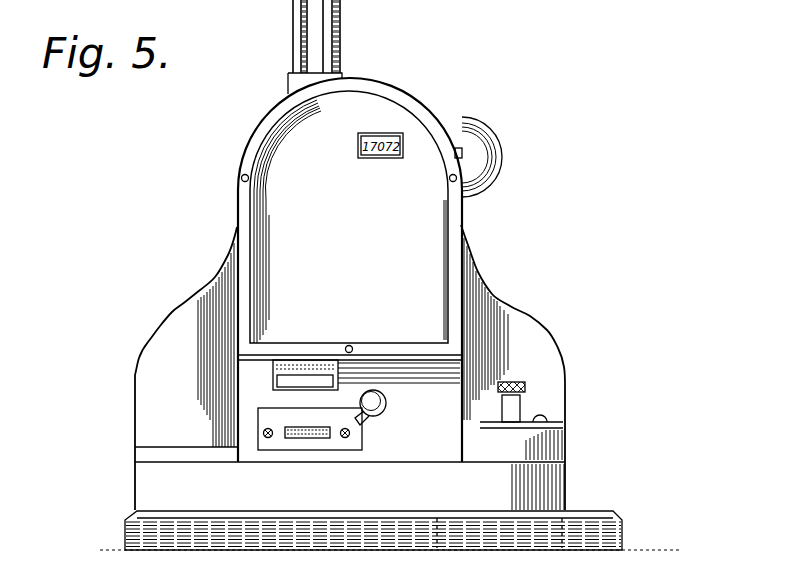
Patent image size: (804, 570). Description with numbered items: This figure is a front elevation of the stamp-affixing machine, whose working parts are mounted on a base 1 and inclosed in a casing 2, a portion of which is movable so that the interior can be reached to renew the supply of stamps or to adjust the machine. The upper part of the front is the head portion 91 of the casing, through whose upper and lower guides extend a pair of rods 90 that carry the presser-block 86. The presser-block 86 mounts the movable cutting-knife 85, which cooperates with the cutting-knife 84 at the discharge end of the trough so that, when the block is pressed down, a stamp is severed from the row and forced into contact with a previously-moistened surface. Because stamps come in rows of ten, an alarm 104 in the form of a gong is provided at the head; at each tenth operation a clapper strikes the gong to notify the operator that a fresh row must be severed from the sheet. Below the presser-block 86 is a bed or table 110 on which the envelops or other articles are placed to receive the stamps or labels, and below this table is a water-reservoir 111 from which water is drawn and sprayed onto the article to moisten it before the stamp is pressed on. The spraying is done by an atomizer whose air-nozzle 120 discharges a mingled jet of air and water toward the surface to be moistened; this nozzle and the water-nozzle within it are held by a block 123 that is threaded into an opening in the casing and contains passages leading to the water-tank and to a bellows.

The base 1 is at (605, 530).
The casing 2 is at (162, 335).
The cutting-knife 84 is at (313, 437).
The movable cutting-knife 85 is at (320, 390).
The presser-block 86 is at (274, 383).
The rods 90 is at (335, 46).
The head portion of the casing 91 is at (350, 221).
The gong or alarm 104 is at (473, 162).
The bed or table 110 is at (400, 491).
The water-reservoir 111 is at (517, 528).
The air-nozzle 120 is at (365, 420).
The block 123 is at (382, 407).